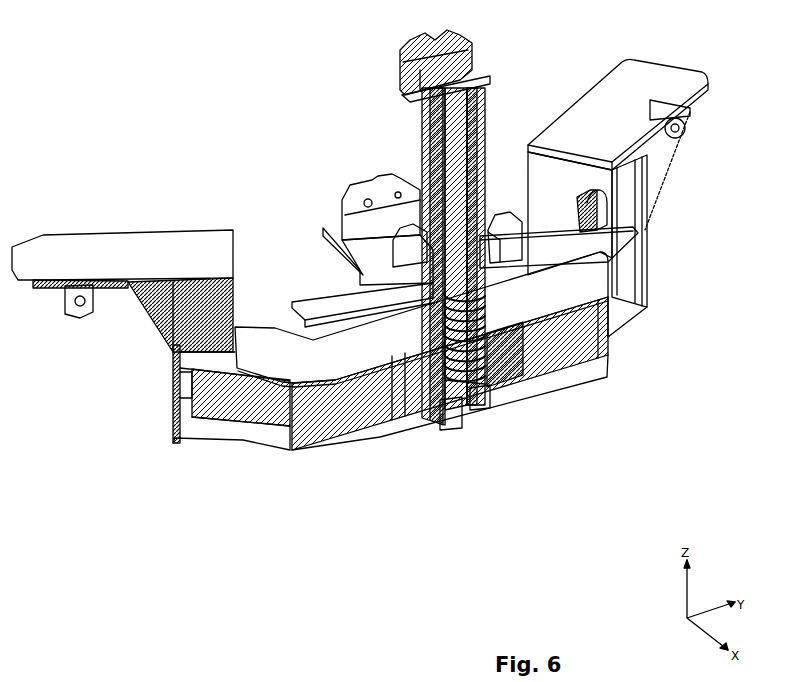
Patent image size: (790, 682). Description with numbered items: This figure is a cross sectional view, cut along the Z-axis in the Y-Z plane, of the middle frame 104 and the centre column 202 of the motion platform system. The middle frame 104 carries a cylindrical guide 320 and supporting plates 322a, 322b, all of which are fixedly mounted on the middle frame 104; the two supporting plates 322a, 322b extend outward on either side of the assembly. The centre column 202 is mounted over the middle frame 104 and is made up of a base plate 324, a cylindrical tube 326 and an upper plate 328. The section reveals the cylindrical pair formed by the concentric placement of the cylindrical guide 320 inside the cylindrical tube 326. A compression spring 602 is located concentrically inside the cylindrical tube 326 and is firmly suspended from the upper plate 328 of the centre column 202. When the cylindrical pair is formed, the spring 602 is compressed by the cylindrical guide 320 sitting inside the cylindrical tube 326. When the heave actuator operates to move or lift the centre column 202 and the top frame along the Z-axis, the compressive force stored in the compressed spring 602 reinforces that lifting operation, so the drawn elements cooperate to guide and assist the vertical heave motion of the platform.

The middle frame 104 is at (472, 438).
The centre column 202 is at (346, 153).
The cylindrical guide 320 is at (487, 387).
The supporting plate 322a is at (43, 235).
The supporting plate 322b is at (658, 72).
The base plate 324 is at (373, 238).
The cylindrical tube 326 is at (428, 145).
The upper plate 328 is at (462, 72).
The compression spring 602 is at (473, 200).